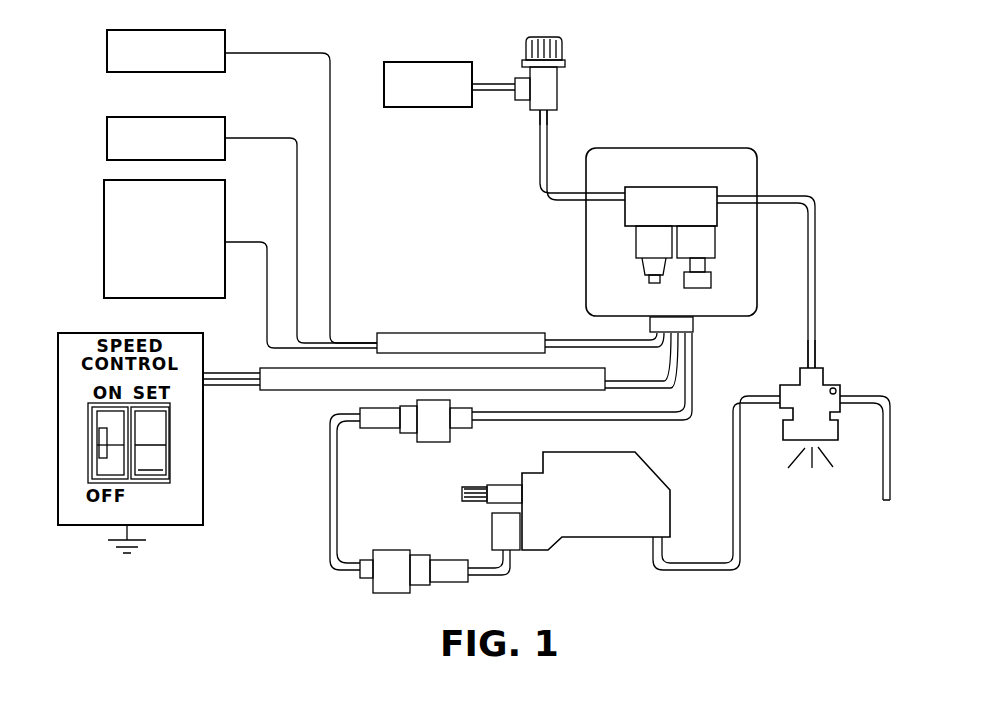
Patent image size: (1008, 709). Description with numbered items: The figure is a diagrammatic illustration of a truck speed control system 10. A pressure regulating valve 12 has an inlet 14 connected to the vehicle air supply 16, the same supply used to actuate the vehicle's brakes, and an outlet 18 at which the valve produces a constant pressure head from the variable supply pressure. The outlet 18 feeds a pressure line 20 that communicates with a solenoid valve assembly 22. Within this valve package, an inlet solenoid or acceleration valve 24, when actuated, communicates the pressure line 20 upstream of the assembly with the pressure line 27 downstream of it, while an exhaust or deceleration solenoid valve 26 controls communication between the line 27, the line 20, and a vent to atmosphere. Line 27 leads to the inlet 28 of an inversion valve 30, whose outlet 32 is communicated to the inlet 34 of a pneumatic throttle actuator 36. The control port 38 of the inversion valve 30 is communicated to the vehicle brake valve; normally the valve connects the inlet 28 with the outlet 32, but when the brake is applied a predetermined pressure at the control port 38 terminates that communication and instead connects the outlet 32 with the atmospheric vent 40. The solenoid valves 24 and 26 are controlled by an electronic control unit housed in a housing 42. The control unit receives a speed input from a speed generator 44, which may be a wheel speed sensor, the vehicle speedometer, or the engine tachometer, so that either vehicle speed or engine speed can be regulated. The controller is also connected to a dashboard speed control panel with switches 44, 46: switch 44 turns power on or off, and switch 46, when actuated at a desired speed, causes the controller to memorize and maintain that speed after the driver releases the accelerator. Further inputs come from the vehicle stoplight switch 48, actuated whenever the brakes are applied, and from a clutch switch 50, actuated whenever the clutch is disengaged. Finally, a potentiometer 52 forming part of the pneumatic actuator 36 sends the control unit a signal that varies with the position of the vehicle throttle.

The truck speed control system 10 is at (760, 82).
The pressure regulating valve 12 is at (574, 59).
The inlet 14 is at (524, 90).
The vehicle air supply 16 is at (466, 71).
The outlet 18 is at (546, 113).
The pressure line 20 is at (538, 151).
The solenoid valve assembly 22 is at (677, 206).
The inlet solenoid or acceleration valve 24 is at (647, 240).
The exhaust or deceleration solenoid valve 26 is at (703, 243).
The pressure line 27 is at (818, 262).
The inlet 28 is at (818, 358).
The inversion valve 30 is at (823, 430).
The outlet 32 is at (777, 394).
The inlet 34 is at (668, 545).
The pneumatic throttle actuator 36 is at (645, 483).
The control port 38 is at (848, 398).
The atmospheric vent 40 is at (806, 446).
The housing 42 is at (740, 167).
The speed generator 44 is at (216, 193).
The set switch 46 is at (160, 424).
The vehicle stoplight switch 48 is at (214, 45).
The clutch switch 50 is at (214, 131).
The potentiometer 52 is at (500, 534).